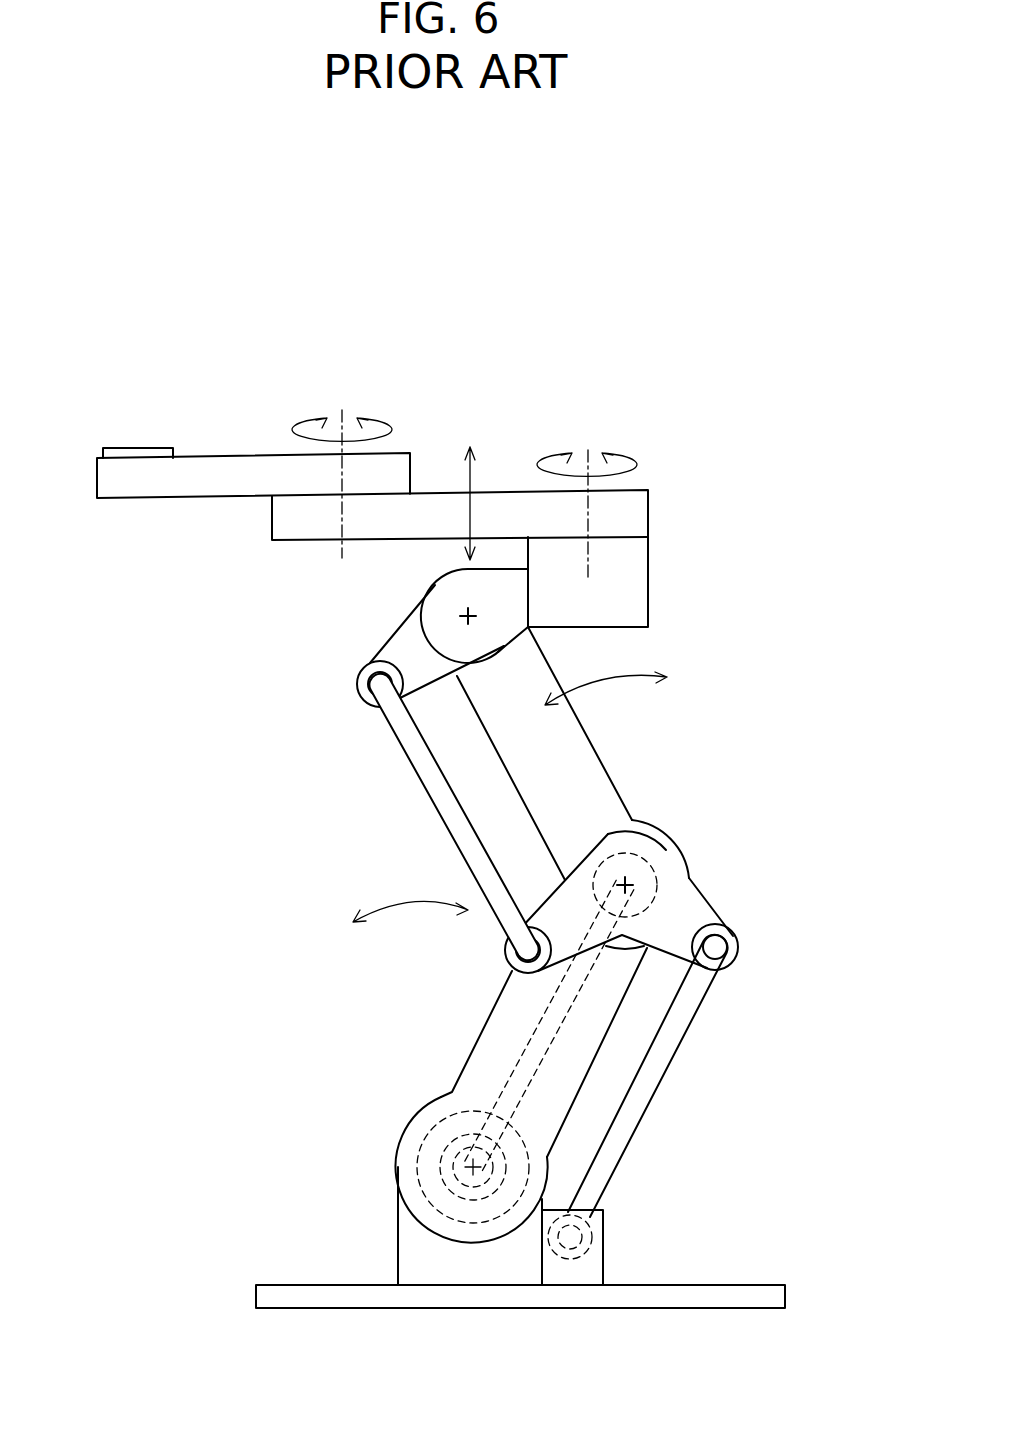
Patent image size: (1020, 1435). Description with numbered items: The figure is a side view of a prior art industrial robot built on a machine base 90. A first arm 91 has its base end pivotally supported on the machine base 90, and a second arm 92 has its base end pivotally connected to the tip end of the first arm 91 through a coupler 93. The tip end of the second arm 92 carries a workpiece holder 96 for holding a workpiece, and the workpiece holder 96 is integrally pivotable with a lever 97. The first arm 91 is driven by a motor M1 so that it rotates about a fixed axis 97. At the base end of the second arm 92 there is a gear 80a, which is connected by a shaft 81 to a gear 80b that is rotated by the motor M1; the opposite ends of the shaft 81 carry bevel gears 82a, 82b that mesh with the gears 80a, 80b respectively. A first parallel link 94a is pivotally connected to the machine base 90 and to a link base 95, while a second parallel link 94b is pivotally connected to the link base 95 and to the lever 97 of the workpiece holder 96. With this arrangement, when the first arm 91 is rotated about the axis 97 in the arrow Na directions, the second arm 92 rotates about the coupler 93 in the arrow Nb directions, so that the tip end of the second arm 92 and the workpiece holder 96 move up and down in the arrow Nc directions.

The machine base 90 is at (285, 1295).
The first arm 91 is at (497, 1023).
The second arm 92 is at (577, 762).
The coupler 93 is at (626, 886).
The first parallel link 94a is at (662, 1058).
The second parallel link 94b is at (433, 790).
The link base 95 is at (685, 908).
The workpiece holder 96 is at (625, 556).
The lever 97 is at (403, 648).
The gear 80a is at (632, 860).
The gear 80b is at (453, 1118).
The shaft 81 is at (530, 1025).
The bevel gear 82a is at (638, 917).
The bevel gear 82b is at (515, 1140).
The motor M1 is at (420, 1222).
The arrow Na directions Na is at (410, 893).
The arrow Nb directions Nb is at (621, 668).
The arrow Nc directions Nc is at (456, 483).